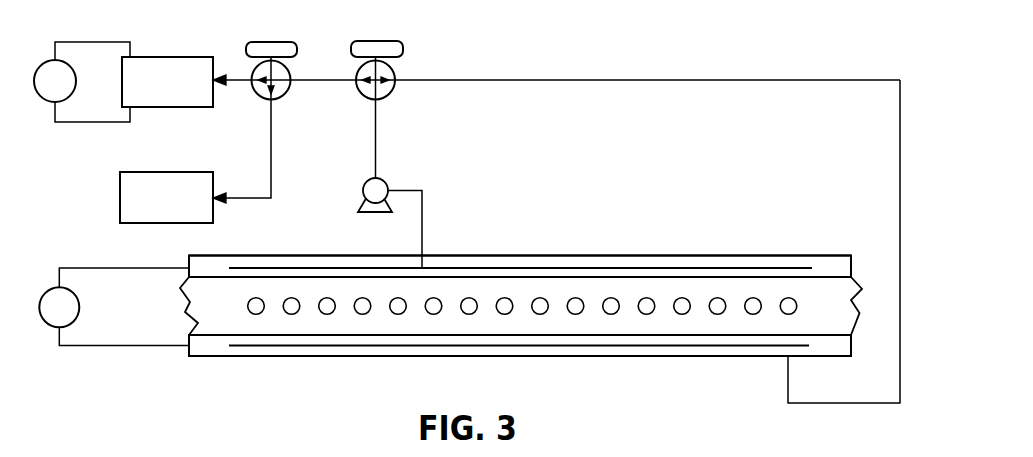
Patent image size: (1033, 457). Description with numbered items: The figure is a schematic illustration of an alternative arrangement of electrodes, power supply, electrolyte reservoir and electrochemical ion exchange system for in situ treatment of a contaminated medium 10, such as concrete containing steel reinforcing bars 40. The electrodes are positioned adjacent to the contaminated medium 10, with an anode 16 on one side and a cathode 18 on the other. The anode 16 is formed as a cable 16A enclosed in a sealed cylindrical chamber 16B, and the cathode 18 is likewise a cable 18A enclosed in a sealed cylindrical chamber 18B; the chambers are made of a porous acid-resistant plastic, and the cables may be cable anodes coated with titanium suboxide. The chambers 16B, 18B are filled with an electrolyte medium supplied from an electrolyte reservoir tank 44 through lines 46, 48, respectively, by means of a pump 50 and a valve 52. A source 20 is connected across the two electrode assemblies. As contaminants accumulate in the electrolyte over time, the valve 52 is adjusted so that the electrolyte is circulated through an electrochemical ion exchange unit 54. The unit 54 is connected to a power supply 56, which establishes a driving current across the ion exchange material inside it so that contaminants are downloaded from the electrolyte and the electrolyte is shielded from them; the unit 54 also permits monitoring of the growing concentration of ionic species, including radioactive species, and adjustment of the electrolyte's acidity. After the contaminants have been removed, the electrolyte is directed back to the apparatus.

The contaminated medium 10 is at (830, 308).
The anode 16 is at (328, 362).
The cable 16A is at (267, 345).
The sealed cylindrical chamber 16B is at (417, 356).
The cathode 18 is at (656, 250).
The cable 18A is at (752, 265).
The sealed cylindrical chamber 18B is at (536, 255).
The power source 20 is at (45, 322).
The steel reinforcing bars 40 is at (645, 314).
The electrolyte reservoir tank 44 is at (130, 197).
The line 46 is at (424, 215).
The line 48 is at (574, 78).
The pump 50 is at (382, 178).
The valve 52 is at (295, 42).
The electrochemical ion exchange unit 54 is at (160, 57).
The power supply 56 is at (40, 63).